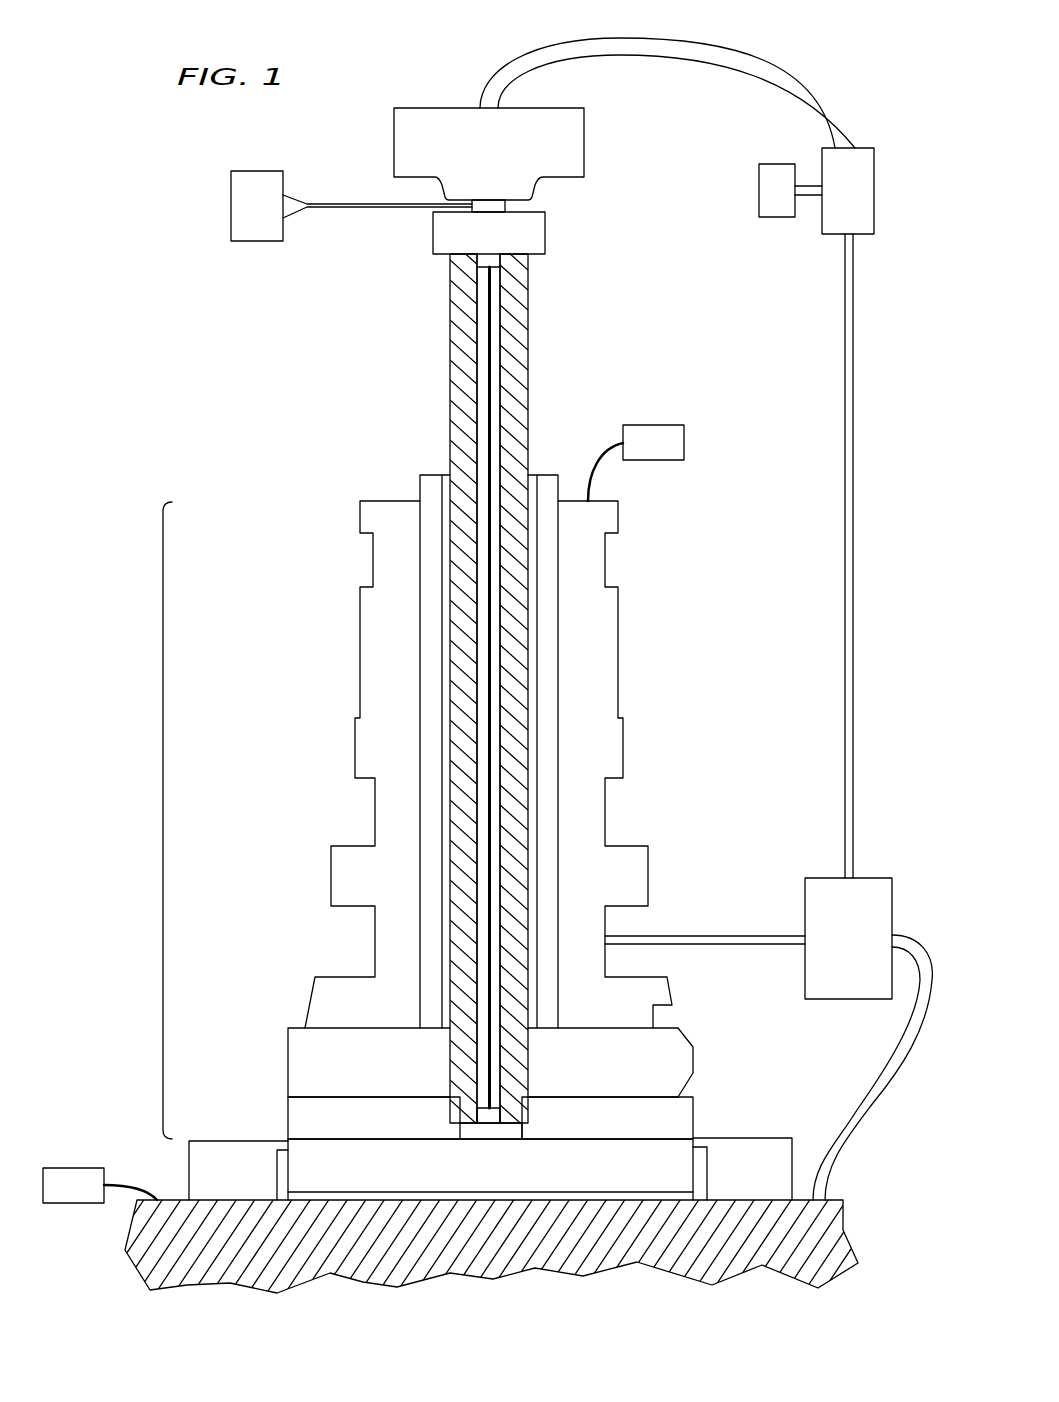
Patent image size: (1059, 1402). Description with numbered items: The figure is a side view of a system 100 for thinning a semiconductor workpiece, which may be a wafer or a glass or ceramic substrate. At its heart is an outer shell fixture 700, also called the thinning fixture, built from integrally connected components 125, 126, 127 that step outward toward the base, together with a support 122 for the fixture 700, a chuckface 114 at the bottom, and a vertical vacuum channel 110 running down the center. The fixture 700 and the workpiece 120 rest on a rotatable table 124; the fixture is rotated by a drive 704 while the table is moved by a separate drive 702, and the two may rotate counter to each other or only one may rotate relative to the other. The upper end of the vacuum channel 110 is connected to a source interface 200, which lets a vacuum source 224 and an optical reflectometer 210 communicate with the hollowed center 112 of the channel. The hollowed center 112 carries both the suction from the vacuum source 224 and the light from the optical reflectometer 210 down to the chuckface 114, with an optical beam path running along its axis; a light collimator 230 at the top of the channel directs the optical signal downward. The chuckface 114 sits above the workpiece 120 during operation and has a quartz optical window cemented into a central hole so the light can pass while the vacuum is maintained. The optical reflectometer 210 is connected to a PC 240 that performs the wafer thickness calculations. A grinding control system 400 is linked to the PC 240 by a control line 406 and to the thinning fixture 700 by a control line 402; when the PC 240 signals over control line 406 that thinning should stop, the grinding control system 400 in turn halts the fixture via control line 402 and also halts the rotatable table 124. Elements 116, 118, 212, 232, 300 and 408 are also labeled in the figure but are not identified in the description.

The system 100 is at (272, 500).
The vacuum channel 110 is at (528, 266).
The hollowed center 112 is at (497, 375).
The chuckface 114 is at (598, 1192).
The central support 116 is at (488, 1132).
The left support block 118 is at (412, 1137).
The workpiece 120 is at (680, 1195).
The support 122 is at (775, 1147).
The rotatable table 124 is at (243, 1203).
The integrally connected component 125 is at (620, 747).
The integrally connected component 126 is at (683, 1063).
The integrally connected component 127 is at (683, 1117).
The source interface 200 is at (433, 235).
The optical reflectometer 210 is at (833, 235).
The gas manifold 212 is at (584, 138).
The vacuum source 224 is at (231, 202).
The light collimator 230 is at (497, 263).
The tube bottom plug 232 is at (493, 1117).
The PC 240 is at (758, 195).
The center electrode 300 is at (485, 423).
The grinding control system 400 is at (805, 905).
The control line 402 is at (676, 936).
The control line 406 is at (853, 555).
The exhaust line 408 is at (905, 1060).
The outer shell fixture 700 is at (162, 824).
The drive 702 is at (72, 1168).
The drive 704 is at (684, 443).